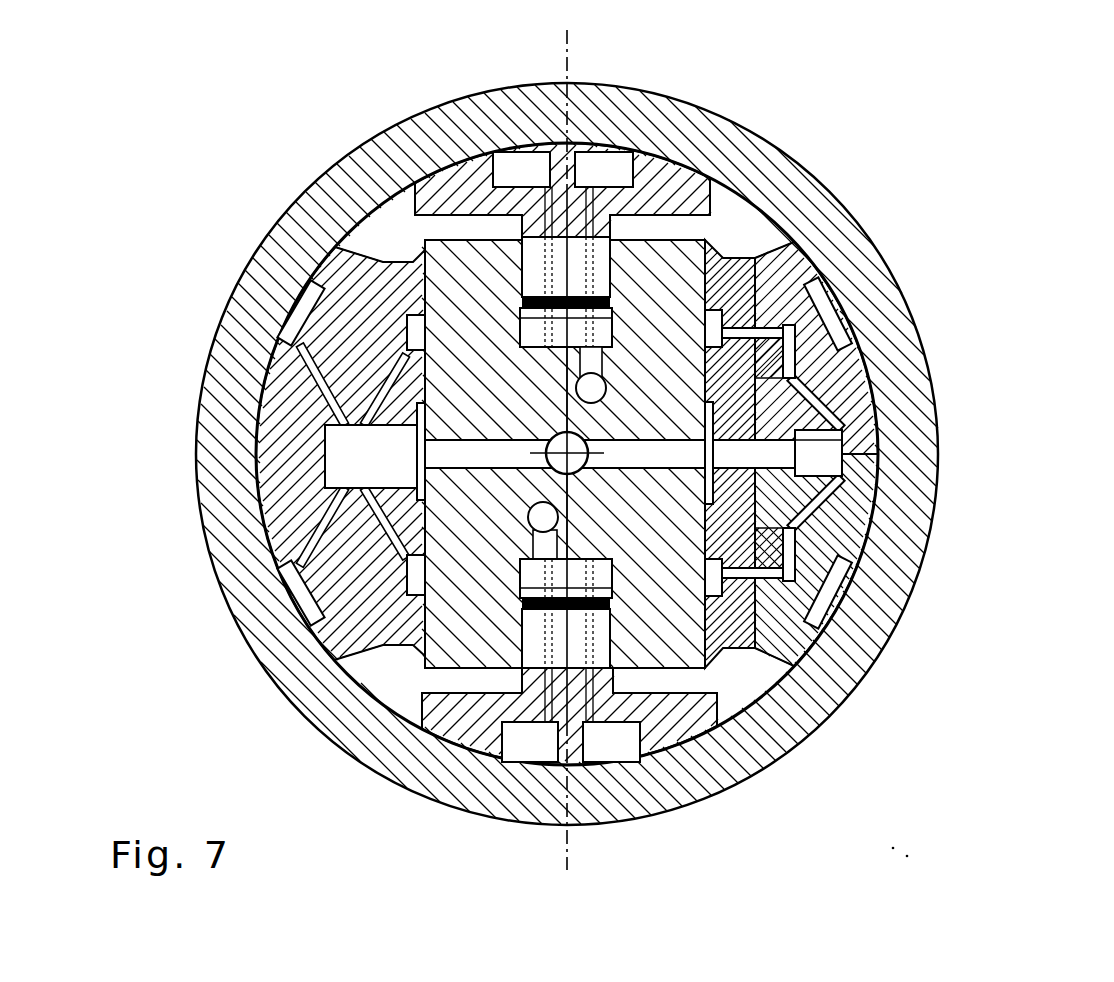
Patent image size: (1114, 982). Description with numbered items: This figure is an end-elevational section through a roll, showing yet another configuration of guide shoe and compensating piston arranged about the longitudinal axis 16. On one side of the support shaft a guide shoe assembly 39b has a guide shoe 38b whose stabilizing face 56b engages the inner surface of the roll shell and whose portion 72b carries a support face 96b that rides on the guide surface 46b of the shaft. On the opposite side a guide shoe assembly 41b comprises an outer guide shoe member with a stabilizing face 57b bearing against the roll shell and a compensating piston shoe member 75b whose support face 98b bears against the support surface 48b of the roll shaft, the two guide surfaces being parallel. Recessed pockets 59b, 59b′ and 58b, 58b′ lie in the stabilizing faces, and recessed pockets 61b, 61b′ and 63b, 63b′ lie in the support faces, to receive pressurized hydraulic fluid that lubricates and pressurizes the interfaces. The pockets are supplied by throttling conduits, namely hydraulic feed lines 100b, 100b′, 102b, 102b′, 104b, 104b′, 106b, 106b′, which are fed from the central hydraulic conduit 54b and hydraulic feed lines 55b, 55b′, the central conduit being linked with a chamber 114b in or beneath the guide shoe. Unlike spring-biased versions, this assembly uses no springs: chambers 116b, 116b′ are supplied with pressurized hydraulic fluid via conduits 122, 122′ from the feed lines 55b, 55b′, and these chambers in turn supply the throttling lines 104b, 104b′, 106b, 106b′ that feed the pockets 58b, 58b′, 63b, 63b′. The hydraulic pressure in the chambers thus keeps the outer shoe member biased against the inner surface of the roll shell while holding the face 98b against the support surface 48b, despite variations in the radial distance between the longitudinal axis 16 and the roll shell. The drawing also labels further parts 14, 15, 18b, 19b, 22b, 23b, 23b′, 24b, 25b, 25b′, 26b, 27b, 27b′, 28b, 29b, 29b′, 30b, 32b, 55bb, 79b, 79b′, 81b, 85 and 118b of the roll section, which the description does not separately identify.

The housing 14 is at (345, 215).
The axis 15 is at (572, 58).
The longitudinal axis 16 is at (566, 450).
The piston 18b is at (546, 342).
The piston 19b is at (597, 570).
The cylinder block 22b is at (683, 165).
The port 23b is at (497, 160).
The port 23b′ is at (597, 163).
The housing ring 24b is at (722, 783).
The cylinder head flange 25b is at (528, 165).
The cylinder head flange 25b′ is at (638, 160).
The roller 26b is at (600, 358).
The port 27b is at (540, 740).
The port 27b′ is at (620, 740).
The roller stem 28b is at (527, 553).
The lower flange 29b is at (515, 685).
The lower flange 29b′ is at (725, 700).
The connecting rod 30b is at (598, 400).
The roller 32b is at (530, 522).
The guide shoe 38b is at (365, 655).
The guide shoe assembly 39b is at (375, 250).
The guide shoe assembly 41b is at (760, 246).
The guide surface 46b is at (420, 672).
The support surface 48b is at (762, 646).
The central hydraulic conduit 54b is at (575, 472).
The hydraulic feed line 55b is at (480, 453).
The hydraulic feed line 55b′ is at (650, 457).
The piston chamber 55bb is at (347, 463).
The stabilizing face 56b is at (335, 620).
The stabilizing face 57b is at (757, 280).
The recessed pocket 58b is at (822, 300).
The recessed pocket 58b′ is at (832, 600).
The recessed pocket 59b is at (293, 323).
The recessed pocket 59b′ is at (300, 592).
The recessed pocket 61b is at (407, 330).
The recessed pocket 61b′ is at (340, 613).
The recessed pocket 63b is at (714, 327).
The recessed pocket 63b′ is at (717, 562).
The portion 72b is at (373, 663).
The compensating piston shoe member 75b is at (740, 258).
The passage 79b is at (790, 335).
The passage 79b′ is at (795, 572).
The piston chamber 81b is at (832, 450).
The chamber wall 85 is at (824, 478).
The support face 96b is at (519, 340).
The support face 98b is at (706, 290).
The hydraulic feed line 100b is at (330, 410).
The hydraulic feed line 100b′ is at (305, 545).
The hydraulic feed line 102b is at (387, 380).
The hydraulic feed line 102b′ is at (373, 522).
The throttling line 104b is at (722, 330).
The throttling line 104b′ is at (722, 578).
The throttling line 106b is at (703, 378).
The throttling line 106b′ is at (706, 542).
The chamber 114b is at (468, 528).
The chamber 116b is at (752, 337).
The chamber 116b′ is at (752, 572).
The edge 118b is at (800, 664).
The conduit 122 is at (822, 415).
The conduit 122′ is at (825, 495).